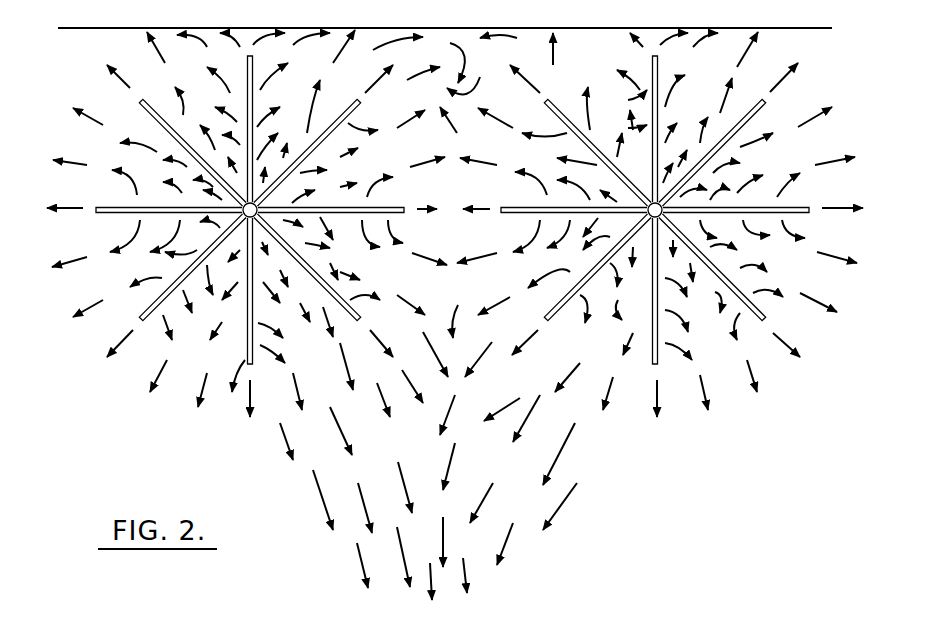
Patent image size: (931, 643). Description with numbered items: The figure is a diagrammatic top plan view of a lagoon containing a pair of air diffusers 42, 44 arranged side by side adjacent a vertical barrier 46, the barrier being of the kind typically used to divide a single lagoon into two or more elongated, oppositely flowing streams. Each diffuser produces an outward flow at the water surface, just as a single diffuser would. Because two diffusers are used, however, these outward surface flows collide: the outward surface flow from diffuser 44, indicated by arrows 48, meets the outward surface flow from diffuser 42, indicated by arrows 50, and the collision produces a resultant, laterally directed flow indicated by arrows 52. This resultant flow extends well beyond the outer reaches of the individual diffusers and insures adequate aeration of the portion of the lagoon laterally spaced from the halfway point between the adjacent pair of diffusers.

The diffuser 42 is at (250, 239).
The diffuser 44 is at (763, 315).
The vertical barrier 46 is at (112, 30).
The arrows 48 is at (490, 312).
The arrows 50 is at (400, 298).
The arrows 52 is at (540, 408).